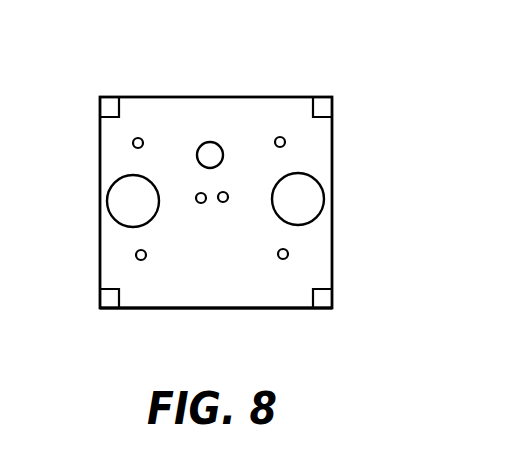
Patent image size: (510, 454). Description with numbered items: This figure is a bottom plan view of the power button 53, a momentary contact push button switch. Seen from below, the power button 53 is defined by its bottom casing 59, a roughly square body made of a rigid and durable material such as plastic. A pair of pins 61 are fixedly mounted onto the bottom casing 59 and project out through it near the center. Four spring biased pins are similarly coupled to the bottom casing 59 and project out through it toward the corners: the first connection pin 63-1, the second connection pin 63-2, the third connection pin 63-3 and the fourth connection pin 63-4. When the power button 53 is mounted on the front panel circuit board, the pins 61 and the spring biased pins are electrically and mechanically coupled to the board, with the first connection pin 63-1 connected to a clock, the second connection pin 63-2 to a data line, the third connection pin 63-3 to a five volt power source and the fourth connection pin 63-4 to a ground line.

The power button 53 is at (163, 68).
The bottom casing 59 is at (170, 287).
The pair of pins 61 is at (223, 202).
The first connection pin 63-1 is at (132, 143).
The second connection pin 63-2 is at (135, 255).
The third connection pin 63-3 is at (279, 137).
The fourth connection pin 63-4 is at (282, 259).